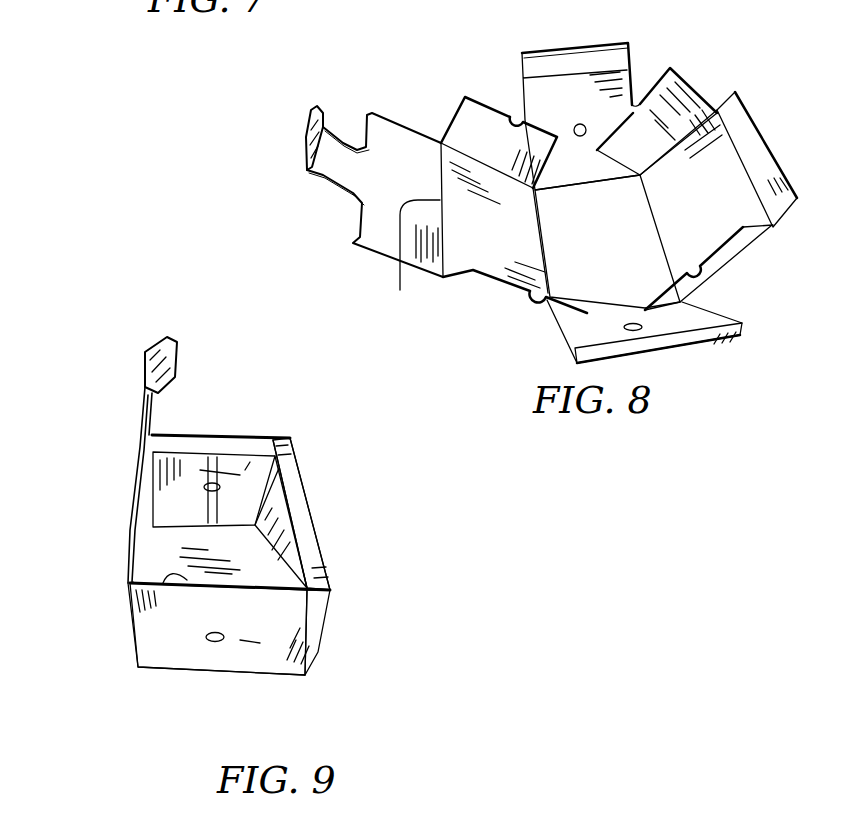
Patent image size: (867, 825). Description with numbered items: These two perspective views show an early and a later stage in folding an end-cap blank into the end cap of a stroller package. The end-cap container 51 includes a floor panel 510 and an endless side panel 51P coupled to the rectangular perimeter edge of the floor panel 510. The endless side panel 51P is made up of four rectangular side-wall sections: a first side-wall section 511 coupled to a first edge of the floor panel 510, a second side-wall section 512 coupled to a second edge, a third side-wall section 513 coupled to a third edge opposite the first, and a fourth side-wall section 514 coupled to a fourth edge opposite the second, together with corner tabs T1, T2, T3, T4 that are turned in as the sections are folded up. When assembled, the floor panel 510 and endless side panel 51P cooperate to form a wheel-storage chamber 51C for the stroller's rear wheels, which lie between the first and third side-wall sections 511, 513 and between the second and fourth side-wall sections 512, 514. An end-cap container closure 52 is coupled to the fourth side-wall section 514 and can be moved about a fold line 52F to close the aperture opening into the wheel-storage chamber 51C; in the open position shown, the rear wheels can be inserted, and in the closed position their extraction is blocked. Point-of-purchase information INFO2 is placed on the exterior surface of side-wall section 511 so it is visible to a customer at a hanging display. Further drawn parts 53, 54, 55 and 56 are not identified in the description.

In FIG. 8, the end-cap container 51 is at (752, 290).
In FIG. 9, the end-cap container 51 is at (103, 628).
In FIG. 8, the floor panel 510 is at (607, 241).
In FIG. 9, the floor panel 510 is at (158, 583).
In FIG. 8, the first side-wall section 511 is at (494, 218).
In FIG. 8, the second side-wall section 512 is at (581, 116).
In FIG. 8, the third side-wall section 513 is at (706, 206).
In FIG. 9, the third side-wall section 513 is at (277, 513).
In FIG. 8, the fourth side-wall section 514 is at (580, 332).
In FIG. 9, the fourth side-wall section 514 is at (313, 606).
In FIG. 9, the wheel-storage chamber 51C is at (250, 508).
In FIG. 9, the endless side panel 51P is at (327, 640).
In FIG. 8, the end-cap container closure 52 is at (388, 268).
In FIG. 9, the end-cap container closure 52 is at (128, 412).
In FIG. 8, the fold line 52F is at (410, 262).
In FIG. 8, the tab 53 is at (323, 113).
In FIG. 9, the tab 53 is at (165, 335).
In FIG. 8, the flange 54 is at (750, 137).
In FIG. 9, the flange 54 is at (308, 540).
In FIG. 8, the pin 55 is at (627, 57).
In FIG. 9, the pin 55 is at (225, 447).
In FIG. 8, the bottom flange 56 is at (740, 337).
In FIG. 8, the corner tab T1 is at (682, 90).
In FIG. 8, the corner tab T2 is at (488, 120).
In FIG. 9, the corner tab T2 is at (187, 465).
In FIG. 8, the corner tab T3 is at (478, 287).
In FIG. 9, the corner tab T3 is at (247, 470).
In FIG. 8, the corner tab T4 is at (738, 248).
In FIG. 9, the point-of-purchase information INFO2 is at (250, 647).